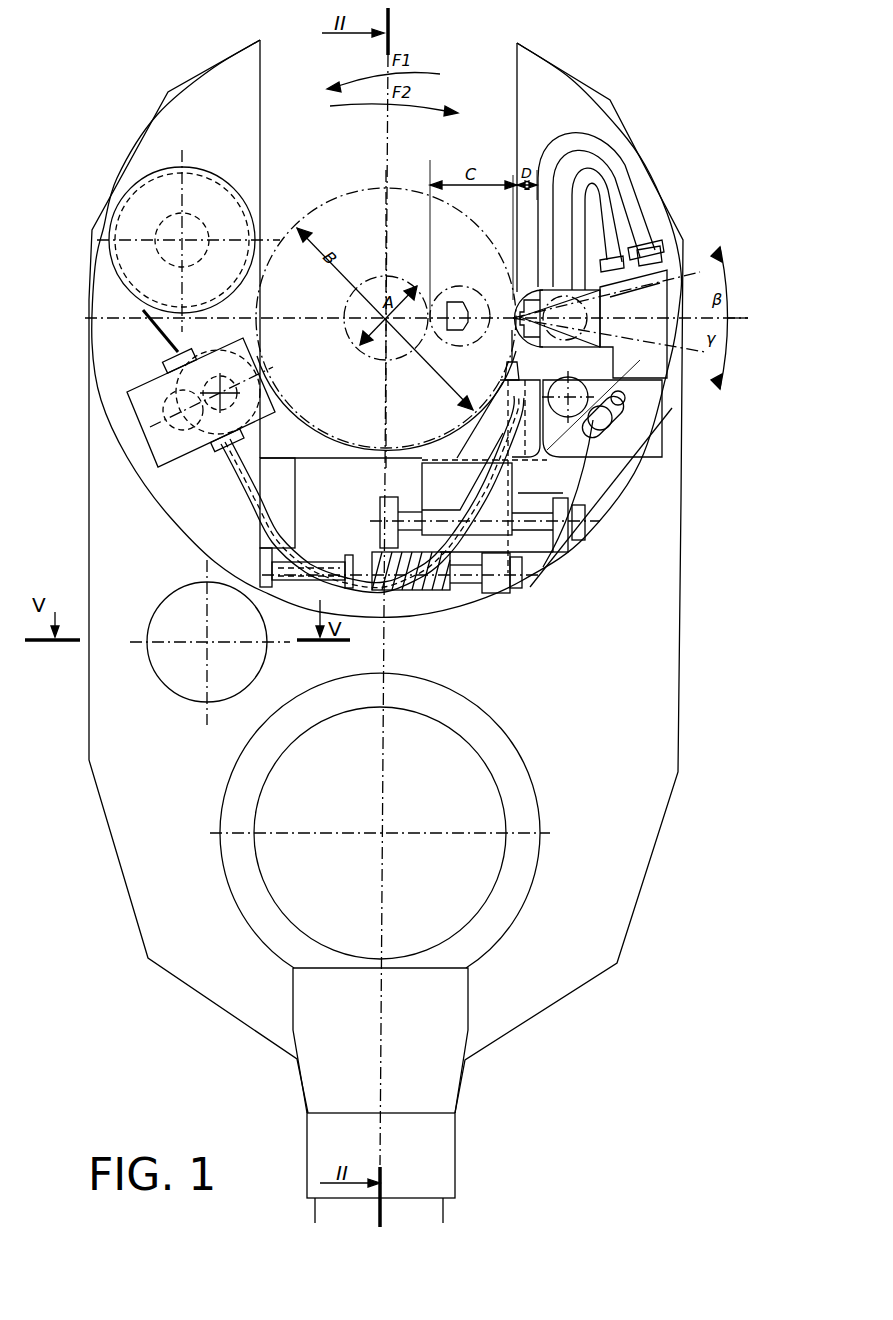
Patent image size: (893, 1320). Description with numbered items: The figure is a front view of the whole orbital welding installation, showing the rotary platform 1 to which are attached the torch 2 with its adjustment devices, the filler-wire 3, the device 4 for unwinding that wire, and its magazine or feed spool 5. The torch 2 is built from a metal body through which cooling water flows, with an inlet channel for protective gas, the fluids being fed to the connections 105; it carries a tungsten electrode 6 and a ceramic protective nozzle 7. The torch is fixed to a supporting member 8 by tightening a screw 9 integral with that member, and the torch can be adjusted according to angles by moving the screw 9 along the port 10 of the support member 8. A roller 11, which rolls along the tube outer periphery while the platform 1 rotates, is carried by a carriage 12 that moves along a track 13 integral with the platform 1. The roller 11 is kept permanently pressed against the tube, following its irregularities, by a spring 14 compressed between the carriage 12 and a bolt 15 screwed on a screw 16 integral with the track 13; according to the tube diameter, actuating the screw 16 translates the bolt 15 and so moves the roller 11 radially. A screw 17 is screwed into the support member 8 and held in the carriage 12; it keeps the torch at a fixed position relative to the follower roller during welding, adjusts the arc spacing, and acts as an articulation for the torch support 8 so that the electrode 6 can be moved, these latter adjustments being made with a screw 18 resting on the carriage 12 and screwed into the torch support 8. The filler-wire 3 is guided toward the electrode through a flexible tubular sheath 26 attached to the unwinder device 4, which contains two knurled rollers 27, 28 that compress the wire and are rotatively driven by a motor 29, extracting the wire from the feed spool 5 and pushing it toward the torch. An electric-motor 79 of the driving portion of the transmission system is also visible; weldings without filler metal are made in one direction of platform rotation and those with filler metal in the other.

The rotary platform 1 is at (565, 101).
The torch 2 is at (658, 298).
The filler-wire 3 is at (157, 330).
The device for unwinding the wire 4 is at (140, 395).
The magazine or feed spool 5 is at (133, 213).
The tungsten electrode 6 is at (493, 332).
The protective nozzle 7 is at (603, 247).
The supporting member 8 is at (577, 405).
The screw 9 is at (610, 420).
The port 10 is at (652, 410).
The roller 11 is at (515, 288).
The carriage 12 is at (346, 468).
The track 13 is at (285, 466).
The spring 14 is at (372, 553).
The bolt 15 is at (452, 588).
The screw 16 is at (472, 576).
The screw 17 is at (538, 527).
The screw 18 is at (602, 432).
The flexible tubular sheath 26 is at (242, 497).
The knurled roller 27 is at (232, 395).
The knurled roller 28 is at (170, 410).
The motor 29 is at (233, 355).
The electric-motor 79 is at (168, 666).
The connections 105 is at (650, 257).